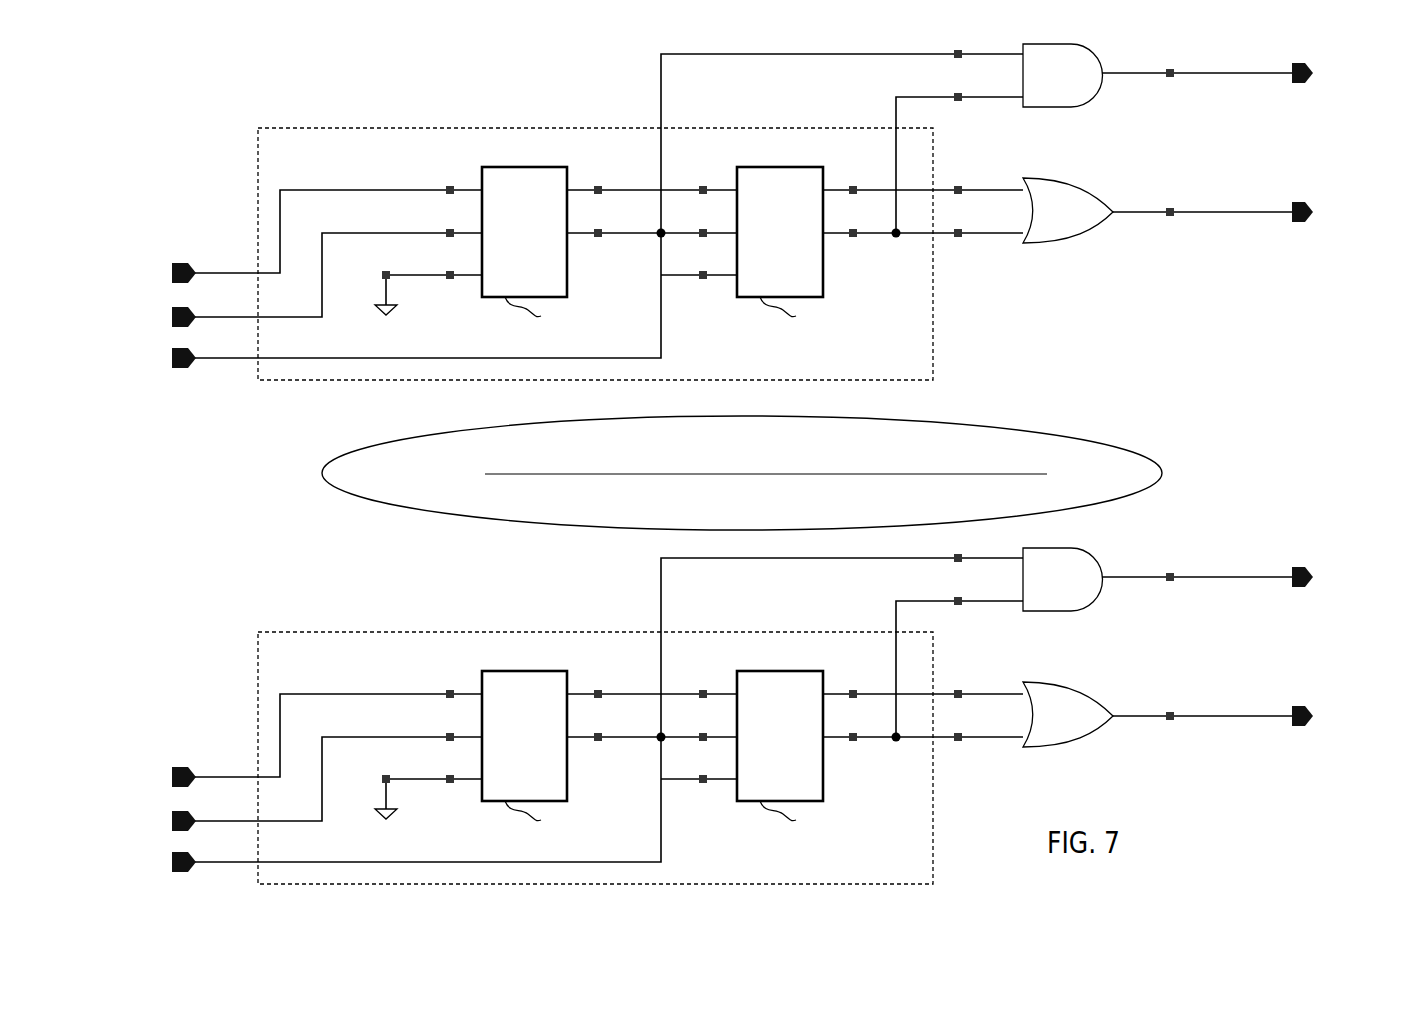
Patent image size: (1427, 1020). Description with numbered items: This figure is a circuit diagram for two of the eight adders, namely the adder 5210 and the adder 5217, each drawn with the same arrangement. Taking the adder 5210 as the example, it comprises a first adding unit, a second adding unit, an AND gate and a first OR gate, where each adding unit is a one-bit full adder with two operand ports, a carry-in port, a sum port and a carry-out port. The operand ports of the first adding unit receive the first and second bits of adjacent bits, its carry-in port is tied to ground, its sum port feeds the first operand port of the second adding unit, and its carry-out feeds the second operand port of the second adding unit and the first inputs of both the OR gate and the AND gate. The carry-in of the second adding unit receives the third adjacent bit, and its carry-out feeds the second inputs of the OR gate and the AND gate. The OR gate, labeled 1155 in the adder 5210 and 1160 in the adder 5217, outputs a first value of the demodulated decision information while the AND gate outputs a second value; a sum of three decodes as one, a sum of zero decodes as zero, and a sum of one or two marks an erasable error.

The adder 5210 is at (1238, 177).
The adder 5217 is at (1254, 677).
The OR gate OR1 1155 is at (1099, 210).
The OR gate OR1 1160 is at (1106, 711).